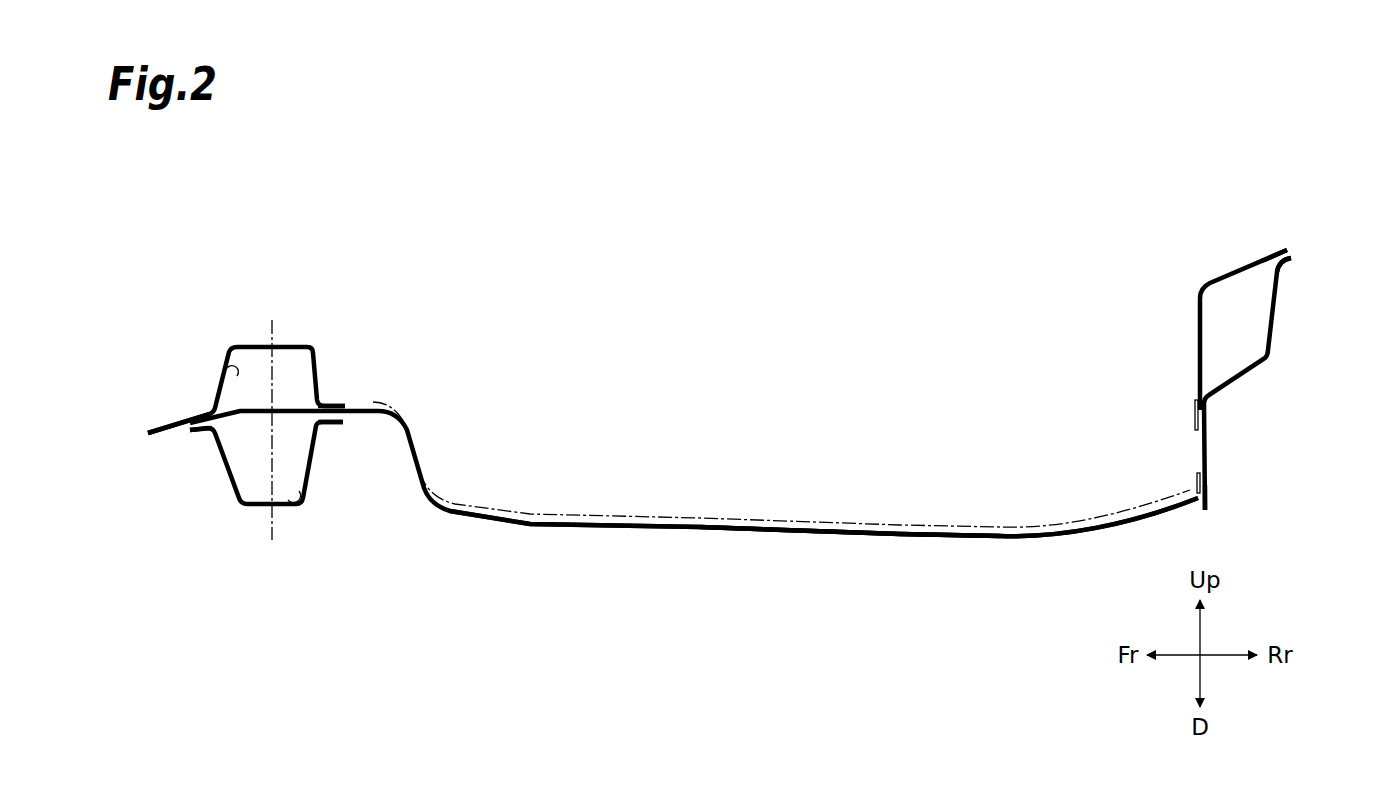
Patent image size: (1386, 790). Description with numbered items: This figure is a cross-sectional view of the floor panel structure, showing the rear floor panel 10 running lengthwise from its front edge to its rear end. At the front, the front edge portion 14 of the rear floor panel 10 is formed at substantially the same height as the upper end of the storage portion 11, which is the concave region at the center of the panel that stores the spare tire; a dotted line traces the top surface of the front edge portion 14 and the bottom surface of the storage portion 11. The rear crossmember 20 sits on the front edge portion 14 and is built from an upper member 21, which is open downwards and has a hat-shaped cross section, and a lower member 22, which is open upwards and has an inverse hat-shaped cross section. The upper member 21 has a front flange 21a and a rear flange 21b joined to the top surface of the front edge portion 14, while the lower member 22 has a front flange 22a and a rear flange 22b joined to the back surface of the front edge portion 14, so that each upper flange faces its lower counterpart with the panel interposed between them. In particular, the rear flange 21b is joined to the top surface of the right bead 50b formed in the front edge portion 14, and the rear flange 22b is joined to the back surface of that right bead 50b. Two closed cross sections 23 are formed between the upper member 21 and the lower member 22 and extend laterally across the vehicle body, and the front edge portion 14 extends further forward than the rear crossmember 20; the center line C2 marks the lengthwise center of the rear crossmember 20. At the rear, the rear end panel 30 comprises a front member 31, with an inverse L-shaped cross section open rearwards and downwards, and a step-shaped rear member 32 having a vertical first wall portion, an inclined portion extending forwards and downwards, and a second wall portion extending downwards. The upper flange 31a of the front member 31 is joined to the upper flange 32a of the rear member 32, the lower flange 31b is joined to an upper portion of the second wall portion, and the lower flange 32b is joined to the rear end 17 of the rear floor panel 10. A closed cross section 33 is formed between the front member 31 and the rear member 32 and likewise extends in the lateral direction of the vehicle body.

The rear floor panel 10 is at (947, 515).
The storage portion 11 is at (737, 516).
The front edge portion 14 is at (375, 403).
The rear end 17 is at (1197, 479).
The rear crossmember 20 is at (285, 433).
The upper member 21 is at (312, 356).
The front flange 21a is at (190, 405).
The rear flange 21b is at (352, 395).
The lower member 22 is at (318, 408).
The front flange 22a is at (208, 432).
The rear flange 22b is at (330, 425).
The closed cross sections 23 is at (231, 375).
The rear end panel 30 is at (1231, 348).
The front member 31 is at (1198, 327).
The upper flange 31a is at (1283, 252).
The lower flange 31b is at (1197, 418).
The rear member 32 is at (1222, 383).
The upper flange 32a is at (1292, 263).
The lower flange 32b is at (1208, 489).
The closed cross section 33 is at (1223, 340).
The right bead 50b is at (828, 530).
The center line C2 is at (273, 329).